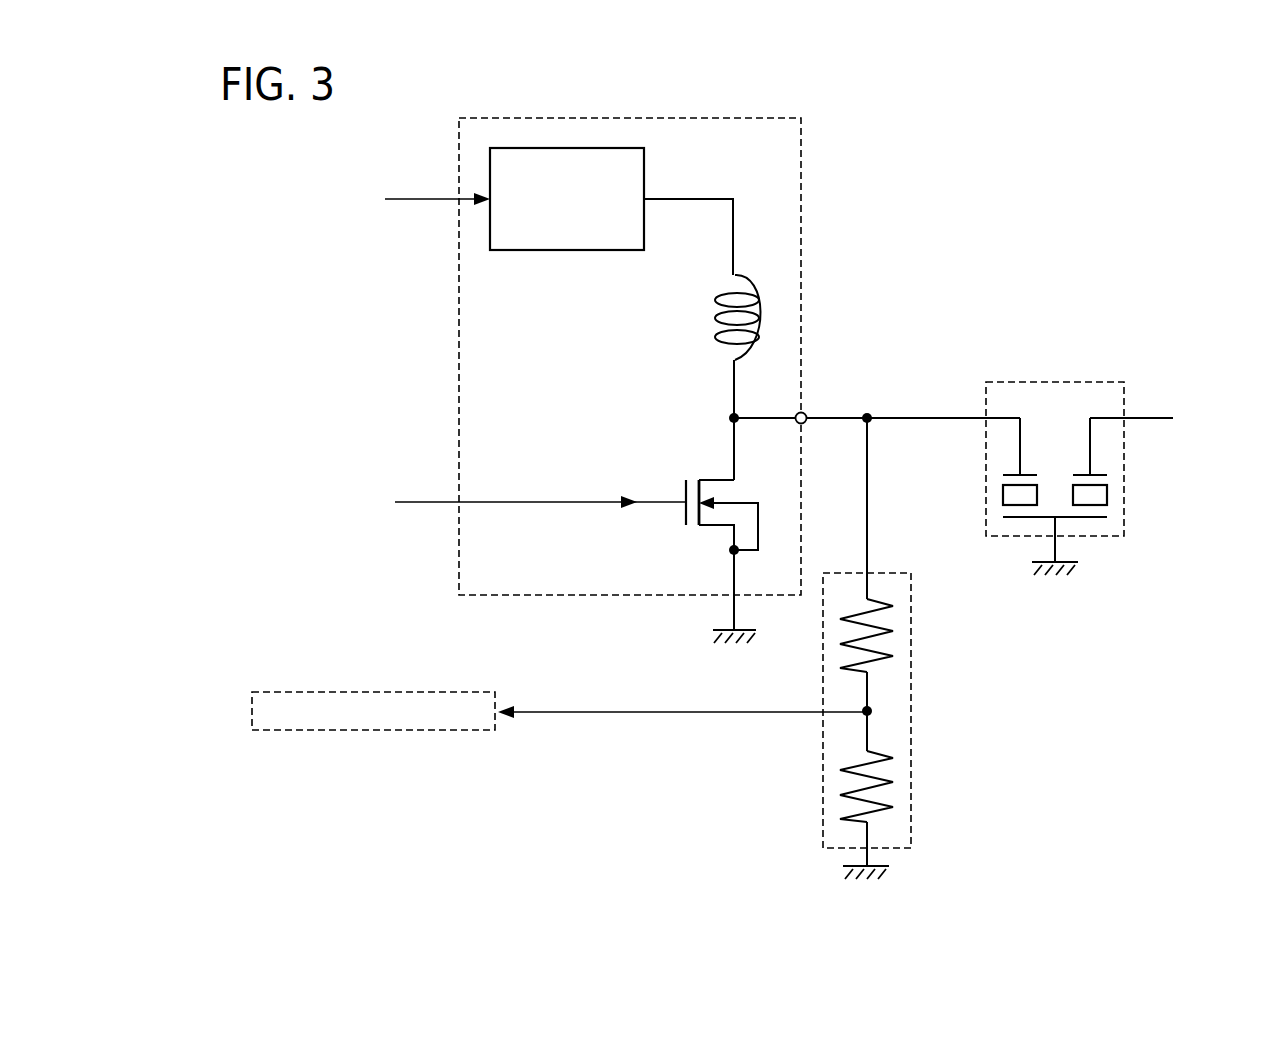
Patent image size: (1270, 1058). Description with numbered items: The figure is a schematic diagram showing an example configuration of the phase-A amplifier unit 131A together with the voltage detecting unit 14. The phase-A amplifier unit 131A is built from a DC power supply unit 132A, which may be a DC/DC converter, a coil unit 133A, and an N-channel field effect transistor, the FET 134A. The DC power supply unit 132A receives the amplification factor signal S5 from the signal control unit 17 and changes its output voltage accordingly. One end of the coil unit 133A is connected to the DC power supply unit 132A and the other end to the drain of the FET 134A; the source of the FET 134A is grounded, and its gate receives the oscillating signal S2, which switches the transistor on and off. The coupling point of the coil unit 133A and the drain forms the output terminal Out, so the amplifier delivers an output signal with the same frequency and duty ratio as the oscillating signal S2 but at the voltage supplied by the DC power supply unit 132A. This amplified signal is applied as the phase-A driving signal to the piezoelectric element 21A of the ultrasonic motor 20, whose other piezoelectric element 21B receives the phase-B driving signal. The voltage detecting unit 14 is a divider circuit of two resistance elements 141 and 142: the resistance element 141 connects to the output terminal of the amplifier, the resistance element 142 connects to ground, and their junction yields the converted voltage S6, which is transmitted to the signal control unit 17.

The phase-A amplifier unit 131A is at (801, 157).
The DC power supply unit 132A is at (644, 165).
The coil unit 133A is at (753, 273).
The FET 134A is at (738, 498).
The ultrasonic motor 20 is at (1055, 446).
The piezoelectric element 21A is at (1018, 495).
The piezoelectric element 21B is at (1088, 495).
The voltage detecting unit 14 is at (908, 648).
The resistance element 141 is at (878, 622).
The resistance element 142 is at (878, 770).
The signal control unit 17 is at (372, 690).
The amplification factor signal S5 is at (437, 189).
The oscillating signal S2 is at (540, 490).
The converted voltage S6 is at (682, 703).
The output terminal Out is at (804, 412).